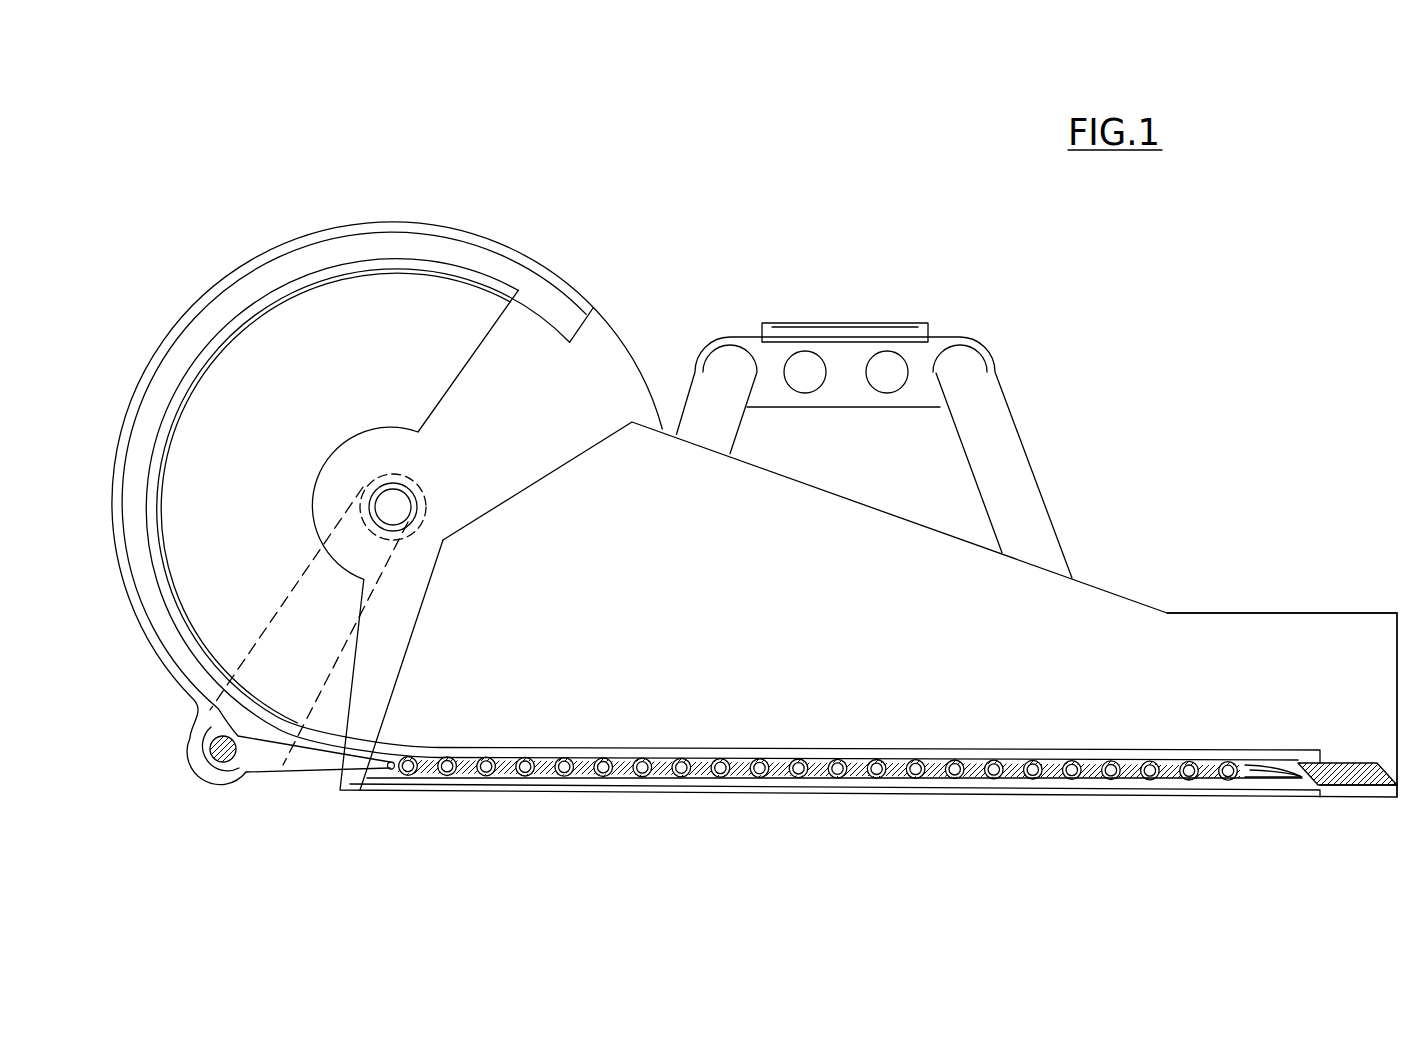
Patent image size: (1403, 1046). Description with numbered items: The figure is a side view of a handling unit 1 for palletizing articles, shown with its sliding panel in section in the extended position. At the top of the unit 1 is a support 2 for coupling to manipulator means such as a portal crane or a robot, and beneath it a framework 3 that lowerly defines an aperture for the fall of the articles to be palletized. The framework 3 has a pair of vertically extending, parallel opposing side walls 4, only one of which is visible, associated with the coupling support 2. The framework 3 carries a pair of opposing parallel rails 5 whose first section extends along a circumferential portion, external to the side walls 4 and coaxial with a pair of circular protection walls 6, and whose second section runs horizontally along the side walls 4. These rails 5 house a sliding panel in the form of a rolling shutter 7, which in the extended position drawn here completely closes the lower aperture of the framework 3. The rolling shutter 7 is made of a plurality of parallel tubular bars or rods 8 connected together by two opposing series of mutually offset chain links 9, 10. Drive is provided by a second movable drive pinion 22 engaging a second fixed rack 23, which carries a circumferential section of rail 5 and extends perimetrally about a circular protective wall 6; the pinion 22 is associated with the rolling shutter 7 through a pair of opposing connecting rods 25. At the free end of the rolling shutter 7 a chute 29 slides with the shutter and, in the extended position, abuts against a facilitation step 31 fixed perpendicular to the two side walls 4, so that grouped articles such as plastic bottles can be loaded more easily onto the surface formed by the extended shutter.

The handling unit 1 is at (1261, 204).
The support 2 is at (905, 330).
The framework 3 is at (1078, 502).
The side walls 4 is at (1368, 680).
The rails 5 is at (491, 265).
The circular protection walls 6 is at (628, 372).
The rolling shutter 7 is at (819, 769).
The tubular bars 8 is at (945, 757).
The chain links 9 is at (1157, 760).
The chain links 10 is at (1020, 760).
The second movable drive pinion 22 is at (230, 780).
The second fixed rack 23 is at (163, 665).
The connecting rods 25 is at (290, 755).
The chute 29 is at (1287, 762).
The facilitation step 31 is at (1342, 786).